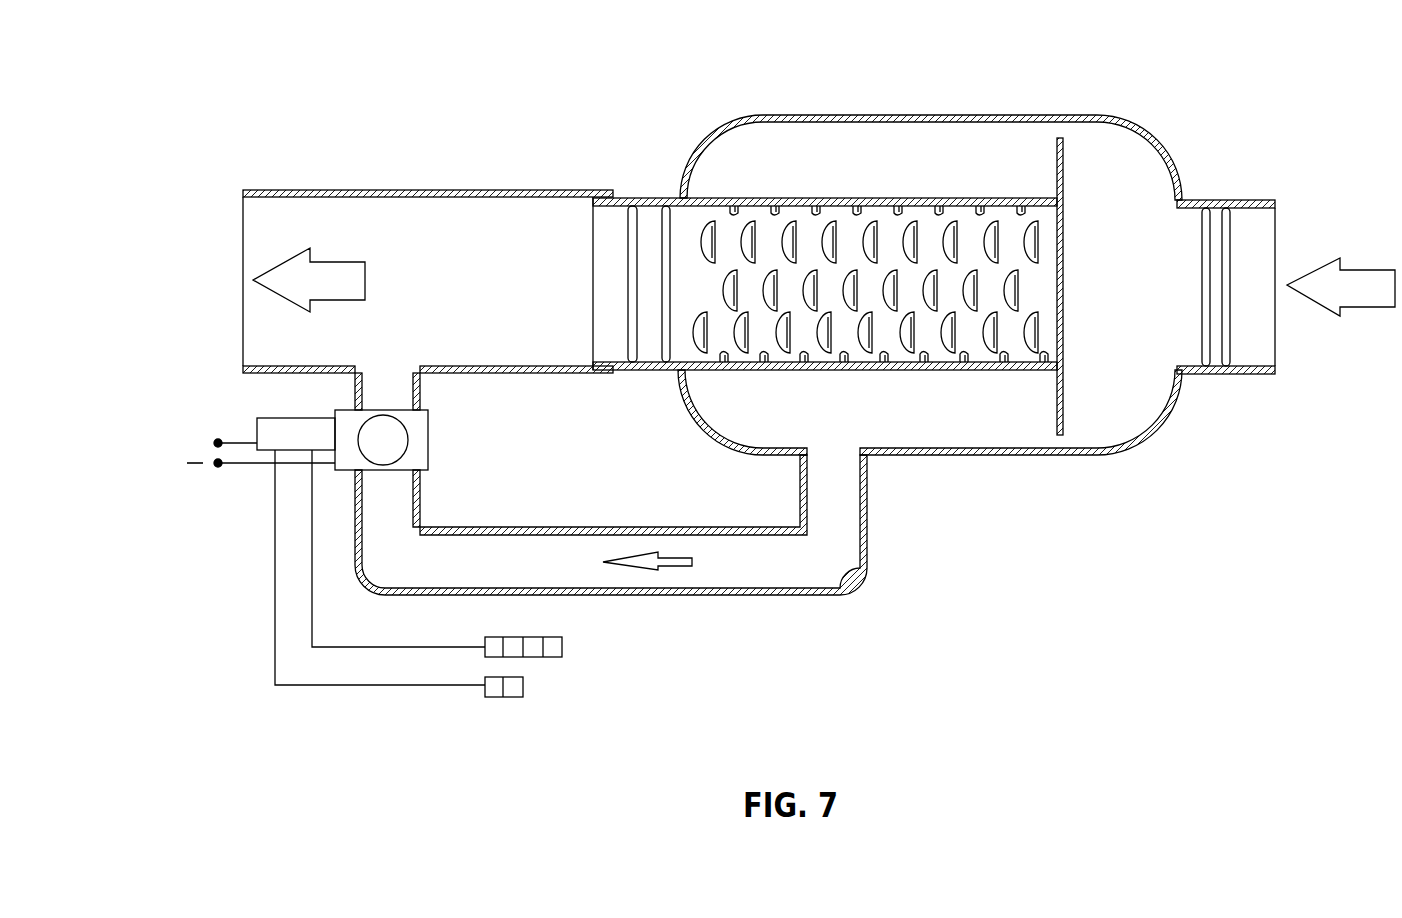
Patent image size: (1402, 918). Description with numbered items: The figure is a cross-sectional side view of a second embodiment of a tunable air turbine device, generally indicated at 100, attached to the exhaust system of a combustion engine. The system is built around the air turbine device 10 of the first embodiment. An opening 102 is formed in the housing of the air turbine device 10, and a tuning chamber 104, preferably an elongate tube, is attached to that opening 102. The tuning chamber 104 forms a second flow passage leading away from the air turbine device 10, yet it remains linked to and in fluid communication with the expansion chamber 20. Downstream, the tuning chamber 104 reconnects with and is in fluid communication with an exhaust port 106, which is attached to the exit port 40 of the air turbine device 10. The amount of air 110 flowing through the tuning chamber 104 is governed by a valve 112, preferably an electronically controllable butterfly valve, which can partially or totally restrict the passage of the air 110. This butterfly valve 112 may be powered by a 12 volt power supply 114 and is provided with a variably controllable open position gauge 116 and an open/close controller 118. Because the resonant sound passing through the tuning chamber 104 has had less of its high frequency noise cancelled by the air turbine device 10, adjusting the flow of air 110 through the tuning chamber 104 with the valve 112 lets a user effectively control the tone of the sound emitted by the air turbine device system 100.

The tunable air turbine device 100 is at (1043, 92).
The air turbine device 10 is at (1145, 427).
The housing wall 12 is at (900, 457).
The expansion chamber 20 is at (1020, 440).
The exit port 40 is at (590, 295).
The opening 102 is at (835, 447).
The tuning chamber 104 is at (700, 595).
The exhaust port 106 is at (343, 190).
The air 110 is at (665, 552).
The valve 112 is at (428, 447).
The power supply 114 is at (238, 467).
The open position gauge 116 is at (562, 647).
The open/close controller 118 is at (523, 688).